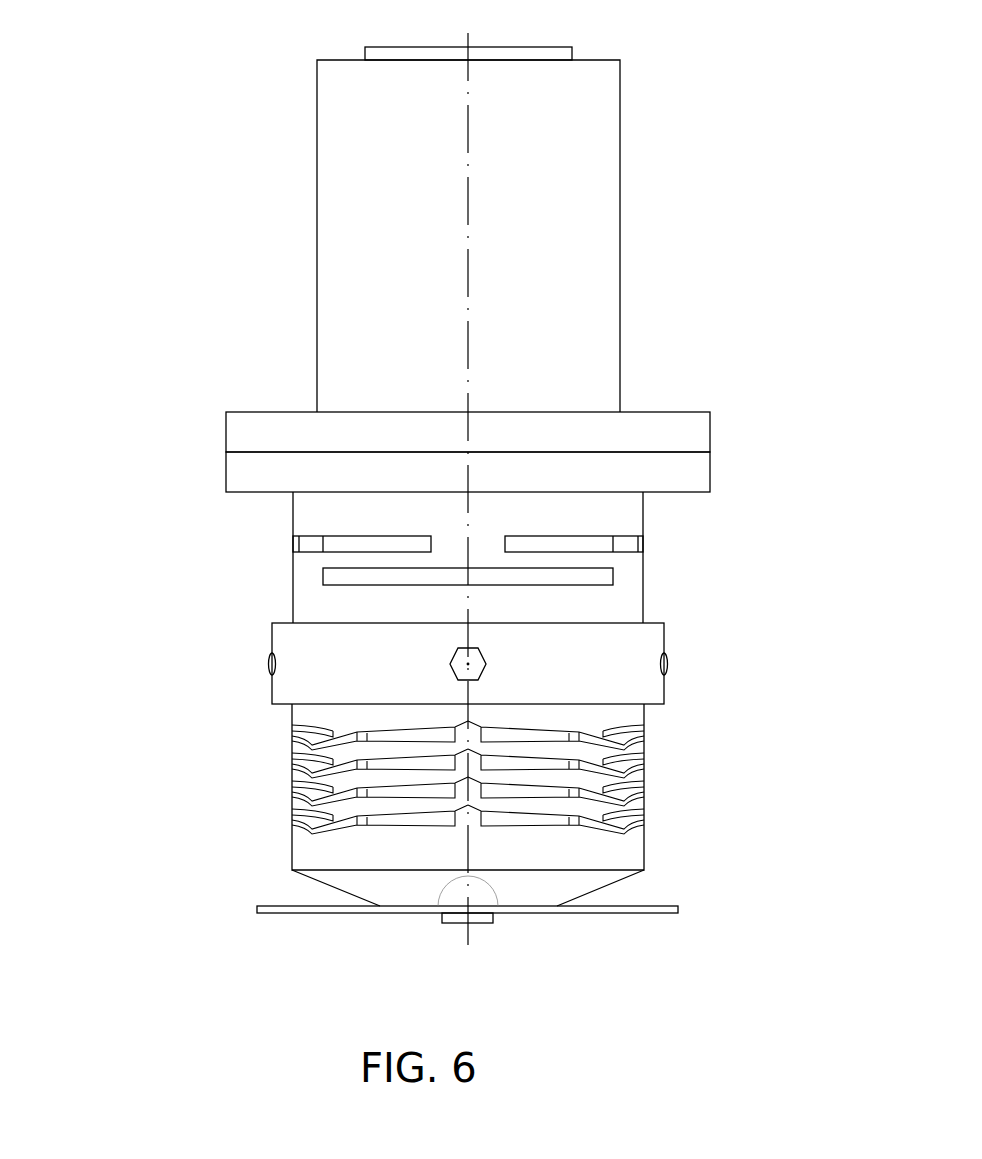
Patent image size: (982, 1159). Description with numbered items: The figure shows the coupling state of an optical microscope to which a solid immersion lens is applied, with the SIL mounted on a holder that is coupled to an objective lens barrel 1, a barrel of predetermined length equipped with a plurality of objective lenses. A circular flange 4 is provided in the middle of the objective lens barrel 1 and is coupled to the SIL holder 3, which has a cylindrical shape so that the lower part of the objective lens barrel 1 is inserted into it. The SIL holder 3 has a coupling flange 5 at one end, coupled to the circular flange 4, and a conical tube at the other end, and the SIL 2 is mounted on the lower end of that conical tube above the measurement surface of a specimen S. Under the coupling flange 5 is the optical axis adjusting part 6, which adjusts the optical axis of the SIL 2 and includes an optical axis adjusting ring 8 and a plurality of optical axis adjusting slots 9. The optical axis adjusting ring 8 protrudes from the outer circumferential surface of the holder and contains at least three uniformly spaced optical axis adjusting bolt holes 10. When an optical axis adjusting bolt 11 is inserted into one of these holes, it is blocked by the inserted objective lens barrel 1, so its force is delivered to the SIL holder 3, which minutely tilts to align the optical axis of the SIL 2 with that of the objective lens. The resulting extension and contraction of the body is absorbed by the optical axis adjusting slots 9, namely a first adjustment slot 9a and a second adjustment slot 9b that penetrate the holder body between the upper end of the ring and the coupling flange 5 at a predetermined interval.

The objective lens barrel 1 is at (423, 531).
The SIL 2 is at (473, 895).
The SIL holder 3 is at (484, 777).
The circular flange 4 is at (638, 445).
The coupling flange 5 is at (669, 484).
The optical axis adjusting part 6 is at (346, 593).
The optical axis adjusting ring 8 is at (337, 657).
The optical axis adjusting slots 9 is at (365, 533).
The first adjustment slot 9a is at (347, 545).
The second adjustment slot 9b is at (338, 577).
The optical axis adjusting bolt holes 10 is at (272, 665).
The optical axis adjusting bolt 11 is at (477, 665).
The specimen S is at (455, 922).